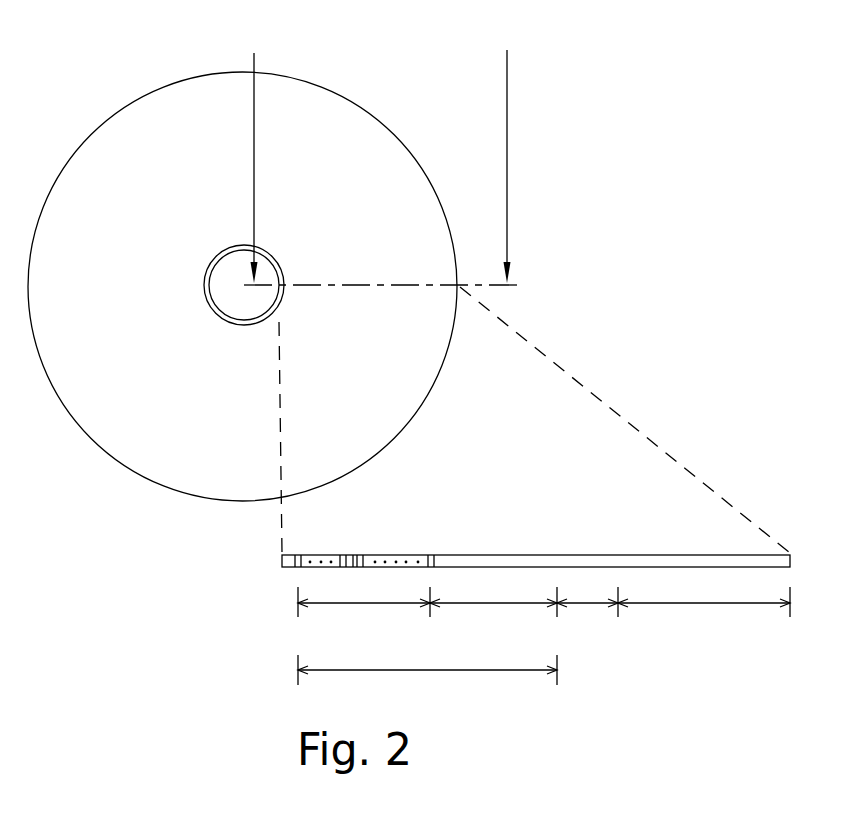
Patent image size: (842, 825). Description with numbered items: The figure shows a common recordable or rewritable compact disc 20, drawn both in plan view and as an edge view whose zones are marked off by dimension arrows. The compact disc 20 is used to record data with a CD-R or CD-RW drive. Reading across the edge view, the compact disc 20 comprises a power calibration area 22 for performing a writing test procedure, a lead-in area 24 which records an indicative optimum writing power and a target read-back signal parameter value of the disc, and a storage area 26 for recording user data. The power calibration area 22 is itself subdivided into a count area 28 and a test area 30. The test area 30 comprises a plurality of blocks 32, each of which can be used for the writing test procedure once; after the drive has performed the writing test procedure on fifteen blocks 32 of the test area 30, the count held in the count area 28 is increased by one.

The compact disc 20 is at (633, 143).
The power calibration area 22 is at (427, 684).
The lead-in area 24 is at (587, 618).
The storage area 26 is at (704, 618).
The count area 28 is at (493, 618).
The test area 30 is at (364, 602).
The blocks 32 is at (363, 556).